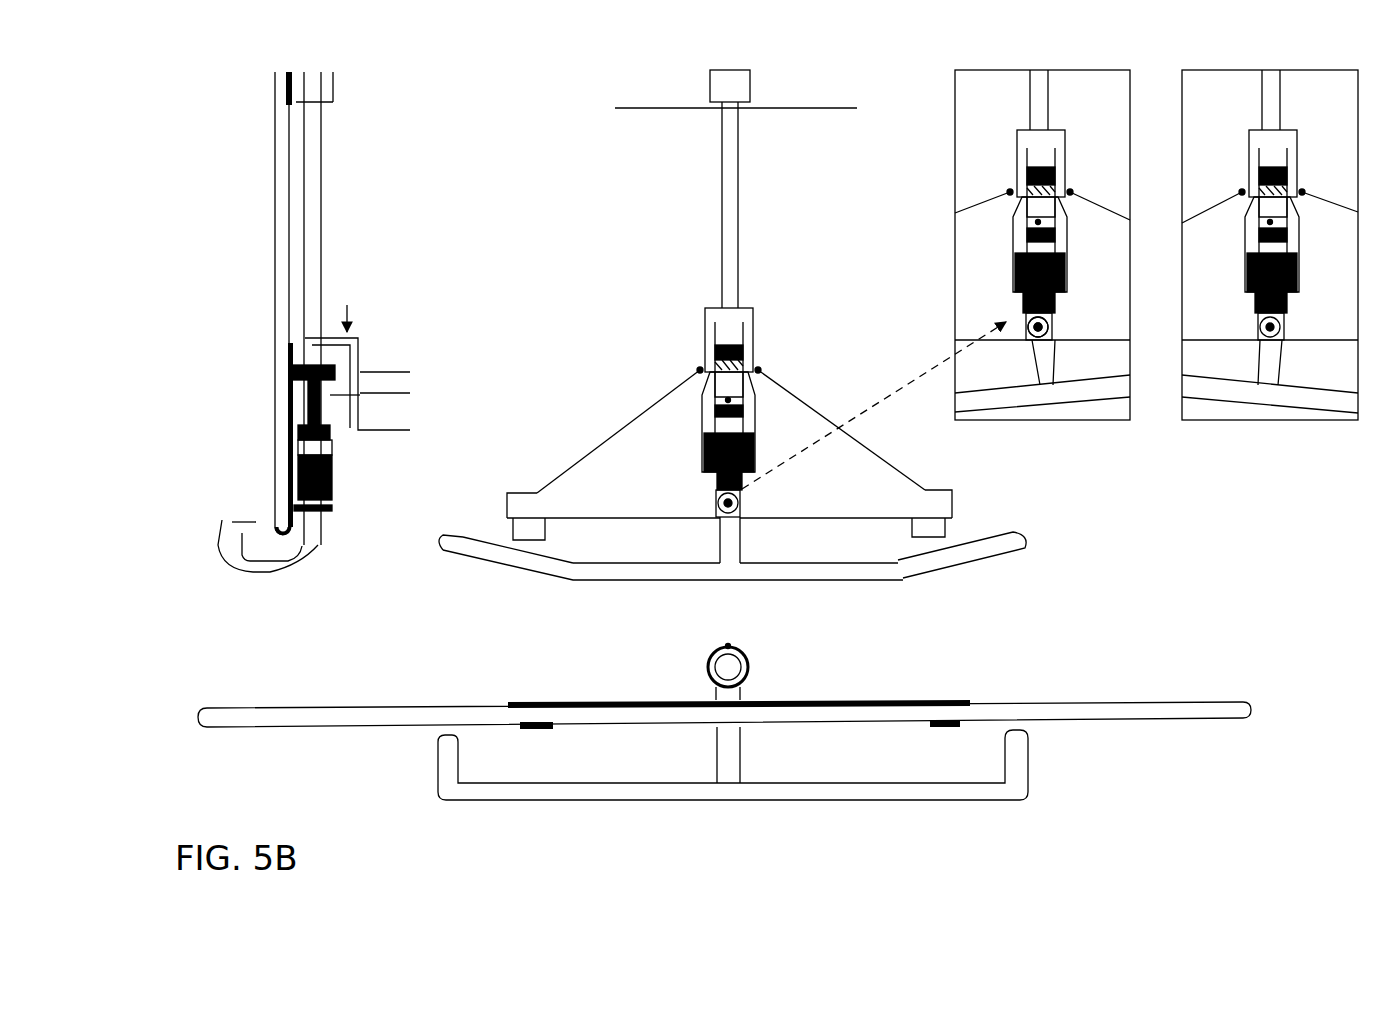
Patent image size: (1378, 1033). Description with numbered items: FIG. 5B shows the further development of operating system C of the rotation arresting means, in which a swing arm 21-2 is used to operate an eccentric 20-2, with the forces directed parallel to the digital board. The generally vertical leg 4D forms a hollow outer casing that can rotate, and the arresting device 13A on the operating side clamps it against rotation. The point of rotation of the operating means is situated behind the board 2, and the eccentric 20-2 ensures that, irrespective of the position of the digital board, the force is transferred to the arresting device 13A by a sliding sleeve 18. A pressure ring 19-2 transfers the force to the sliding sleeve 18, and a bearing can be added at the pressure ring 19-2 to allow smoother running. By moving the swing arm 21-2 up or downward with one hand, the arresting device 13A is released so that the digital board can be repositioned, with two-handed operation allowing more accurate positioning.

The board 2 is at (271, 265).
The leg 4D is at (332, 206).
The arresting device 13A is at (757, 312).
The sliding sleeve 18 is at (758, 449).
The eccentric 20-2 is at (714, 491).
The pressure ring 19-2 is at (1064, 305).
The swing arm 21-2 is at (316, 566).